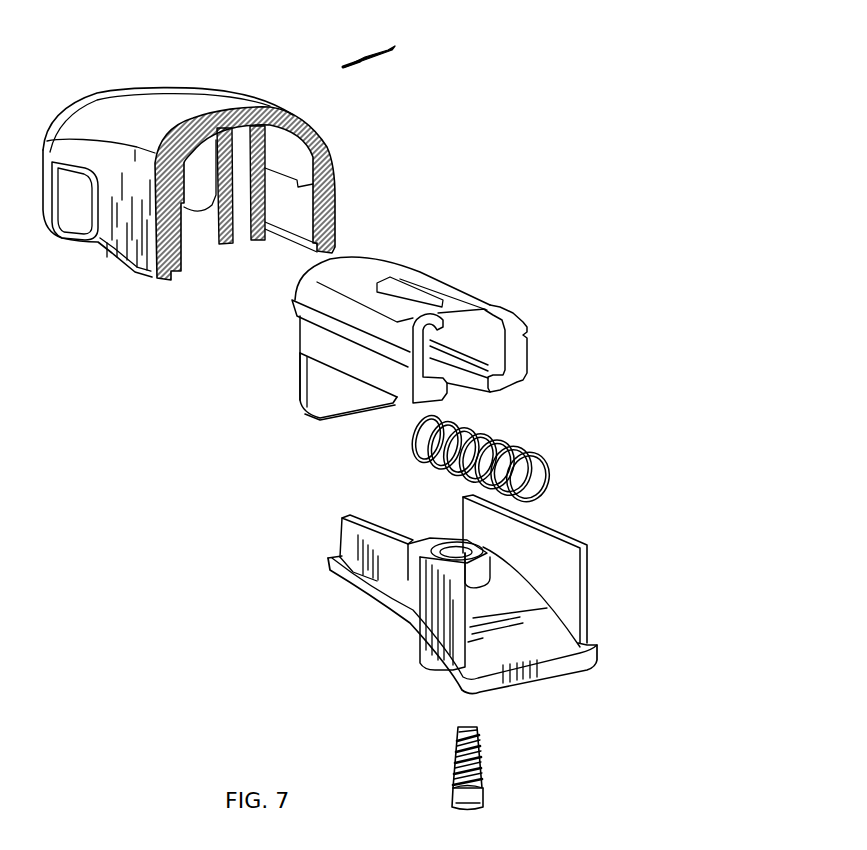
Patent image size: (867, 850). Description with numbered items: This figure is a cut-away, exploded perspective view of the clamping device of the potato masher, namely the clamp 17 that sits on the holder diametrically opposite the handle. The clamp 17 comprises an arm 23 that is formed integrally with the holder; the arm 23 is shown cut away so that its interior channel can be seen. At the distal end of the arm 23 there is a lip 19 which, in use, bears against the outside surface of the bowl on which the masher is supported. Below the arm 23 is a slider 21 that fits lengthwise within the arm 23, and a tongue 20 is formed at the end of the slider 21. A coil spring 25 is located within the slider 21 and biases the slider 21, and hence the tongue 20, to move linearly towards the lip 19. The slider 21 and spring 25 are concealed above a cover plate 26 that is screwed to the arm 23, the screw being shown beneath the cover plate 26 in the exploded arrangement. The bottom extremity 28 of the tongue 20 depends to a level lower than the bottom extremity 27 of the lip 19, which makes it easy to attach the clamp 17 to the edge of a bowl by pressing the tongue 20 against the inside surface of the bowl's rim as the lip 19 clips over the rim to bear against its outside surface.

The clamp 17 is at (392, 50).
The lip 19 is at (78, 213).
The tongue 20 is at (333, 402).
The slider 21 is at (375, 263).
The arm 23 is at (173, 110).
The coil spring 25 is at (543, 463).
The cover plate 26 is at (553, 648).
The bottom extremity of the lip 27 is at (88, 240).
The bottom extremity of the tongue 28 is at (352, 415).